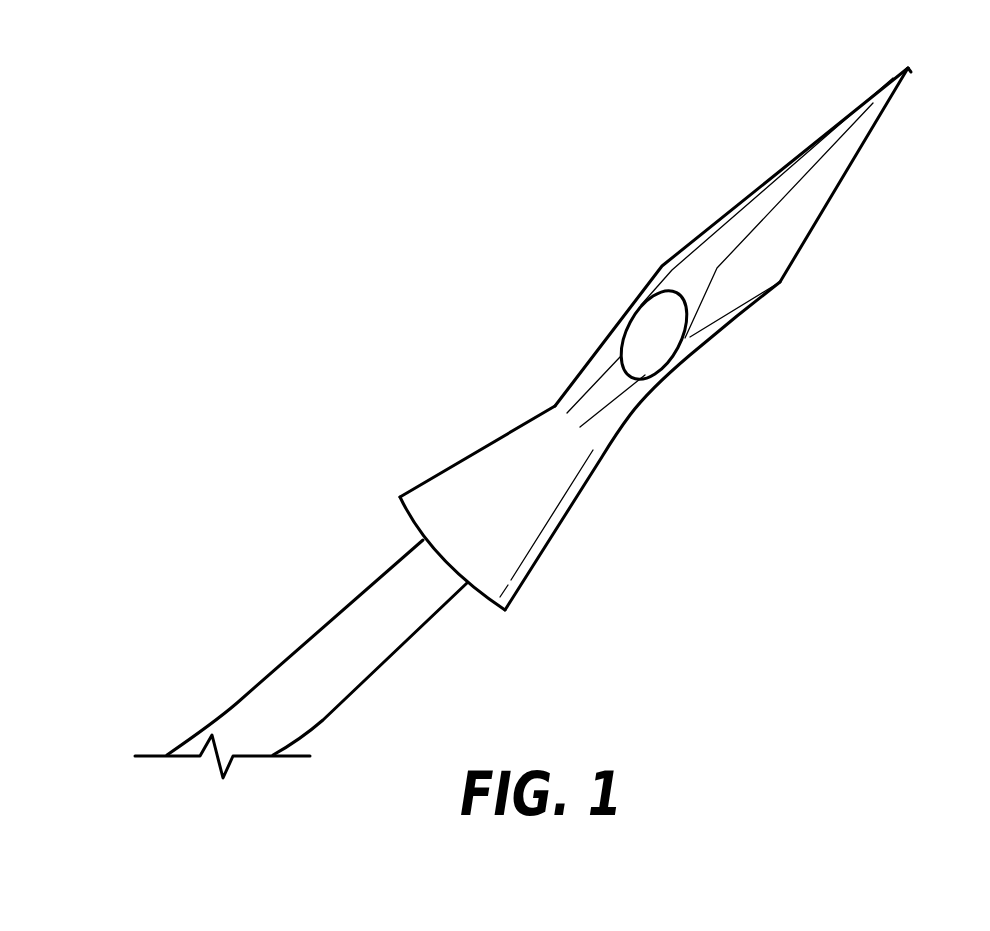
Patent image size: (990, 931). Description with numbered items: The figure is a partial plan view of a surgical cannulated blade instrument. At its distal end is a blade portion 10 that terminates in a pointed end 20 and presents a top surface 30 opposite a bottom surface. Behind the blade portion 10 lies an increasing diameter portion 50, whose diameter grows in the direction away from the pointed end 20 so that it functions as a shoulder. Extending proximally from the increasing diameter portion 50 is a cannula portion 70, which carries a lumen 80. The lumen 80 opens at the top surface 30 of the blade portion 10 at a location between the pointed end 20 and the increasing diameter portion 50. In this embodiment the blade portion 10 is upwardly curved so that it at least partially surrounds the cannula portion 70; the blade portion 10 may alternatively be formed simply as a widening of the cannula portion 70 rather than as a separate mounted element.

The blade portion 10 is at (822, 190).
The pointed end 20 is at (908, 68).
The top surface 30 is at (715, 250).
The increasing diameter portion 50 is at (488, 458).
The cannula portion 70 is at (338, 642).
The lumen 80 is at (653, 298).